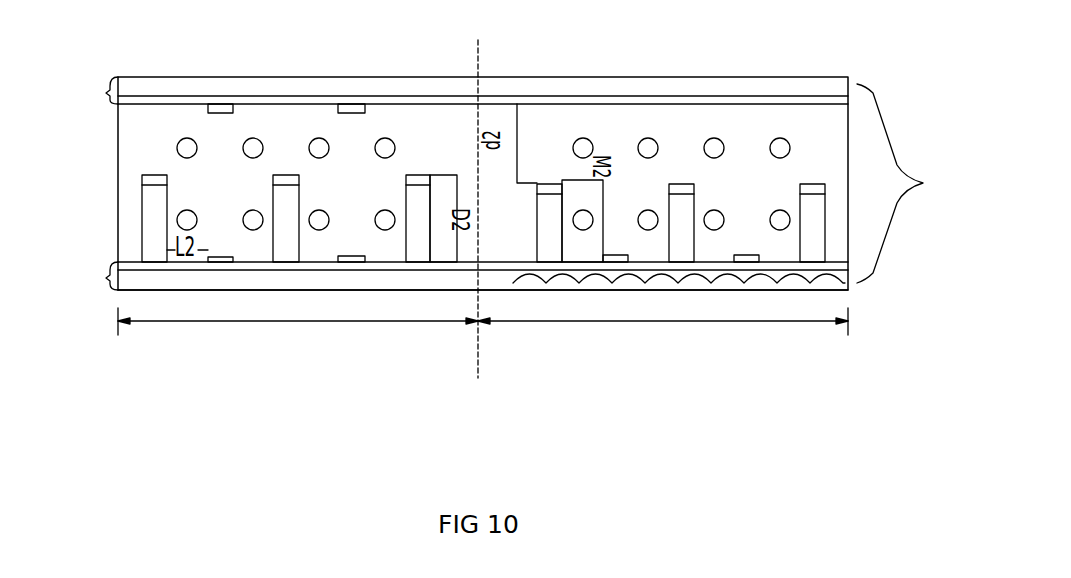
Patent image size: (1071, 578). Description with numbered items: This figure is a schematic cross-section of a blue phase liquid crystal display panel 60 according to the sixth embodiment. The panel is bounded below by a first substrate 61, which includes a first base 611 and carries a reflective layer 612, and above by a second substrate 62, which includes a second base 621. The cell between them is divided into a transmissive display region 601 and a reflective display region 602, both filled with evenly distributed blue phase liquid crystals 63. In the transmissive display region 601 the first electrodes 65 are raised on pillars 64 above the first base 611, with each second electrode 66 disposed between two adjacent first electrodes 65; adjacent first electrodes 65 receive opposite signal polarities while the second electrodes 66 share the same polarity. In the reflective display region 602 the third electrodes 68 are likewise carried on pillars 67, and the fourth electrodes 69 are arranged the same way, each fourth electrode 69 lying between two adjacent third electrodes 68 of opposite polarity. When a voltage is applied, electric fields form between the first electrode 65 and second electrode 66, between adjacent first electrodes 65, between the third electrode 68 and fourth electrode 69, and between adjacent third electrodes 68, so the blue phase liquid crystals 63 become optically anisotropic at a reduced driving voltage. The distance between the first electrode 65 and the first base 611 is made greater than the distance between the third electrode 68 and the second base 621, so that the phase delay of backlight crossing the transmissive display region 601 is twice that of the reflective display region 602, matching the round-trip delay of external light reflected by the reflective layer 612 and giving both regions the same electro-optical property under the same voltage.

The blue phase liquid crystal display panel 60 is at (923, 183).
The first substrate 61 is at (106, 278).
The first base 611 is at (92, 235).
The second substrate 62 is at (106, 93).
The second base 621 is at (132, 102).
The blue phase liquid crystals 63 is at (178, 152).
The first support pillar 64 is at (283, 244).
The first electrodes 65 is at (285, 188).
The second electrodes 66 is at (355, 262).
The second support pillar 67 is at (551, 233).
The third electrodes 68 is at (683, 190).
The fourth electrodes 69 is at (747, 262).
The reflective layer 612 is at (530, 280).
The transmissive display region 601 is at (298, 313).
The reflective display region 602 is at (663, 313).